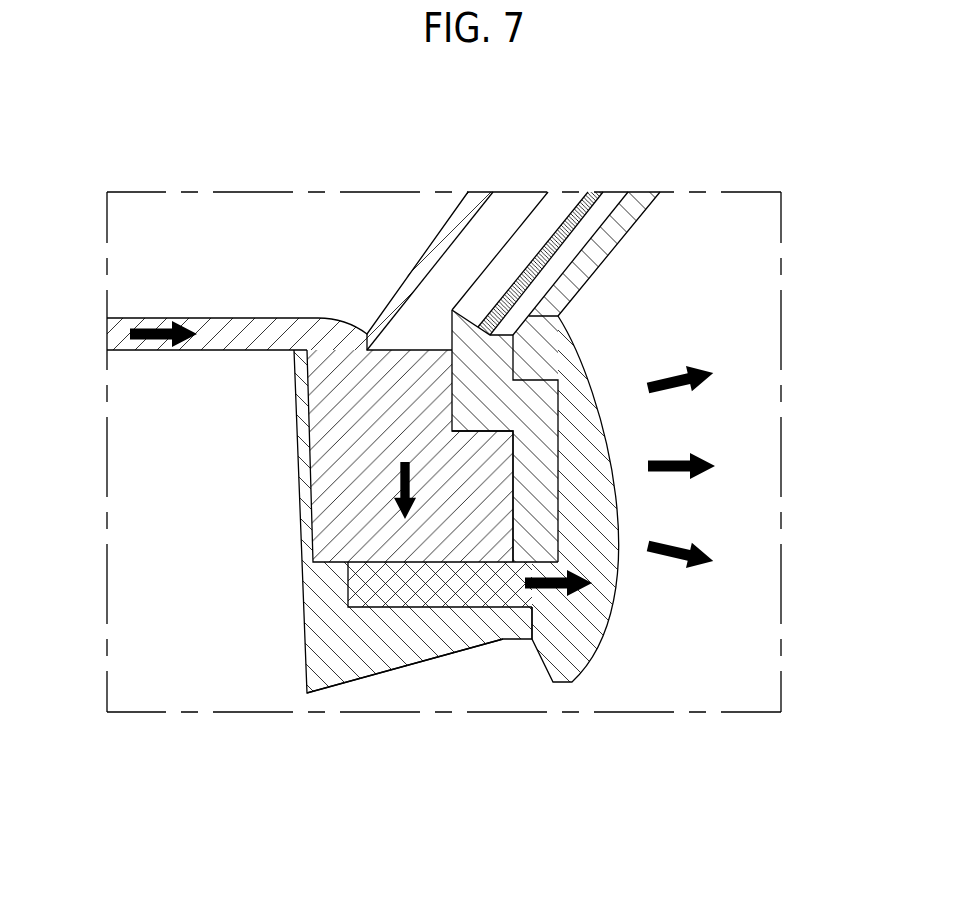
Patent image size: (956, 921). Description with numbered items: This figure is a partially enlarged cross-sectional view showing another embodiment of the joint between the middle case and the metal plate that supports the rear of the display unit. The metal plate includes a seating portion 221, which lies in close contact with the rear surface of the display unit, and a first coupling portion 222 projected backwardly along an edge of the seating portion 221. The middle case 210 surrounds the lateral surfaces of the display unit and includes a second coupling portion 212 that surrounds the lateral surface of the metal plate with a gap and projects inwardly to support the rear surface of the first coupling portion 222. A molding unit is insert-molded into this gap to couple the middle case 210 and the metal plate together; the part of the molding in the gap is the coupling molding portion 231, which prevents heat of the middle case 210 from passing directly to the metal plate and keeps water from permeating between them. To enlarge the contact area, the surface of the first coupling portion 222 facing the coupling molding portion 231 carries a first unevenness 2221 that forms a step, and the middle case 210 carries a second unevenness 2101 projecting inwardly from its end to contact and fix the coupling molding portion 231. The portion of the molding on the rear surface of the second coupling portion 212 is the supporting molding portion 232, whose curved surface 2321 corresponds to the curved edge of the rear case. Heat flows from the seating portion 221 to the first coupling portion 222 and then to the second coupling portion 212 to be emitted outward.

The middle case 210 is at (566, 682).
The second unevenness 2101 is at (557, 357).
The seating portion 221 is at (211, 318).
The first coupling portion 222 is at (373, 485).
The first unevenness 2221 is at (500, 545).
The coupling molding portion 231 is at (584, 210).
The supporting molding portion 232 is at (328, 652).
The curved surface 2321 is at (380, 683).
The second coupling portion 212 is at (437, 598).